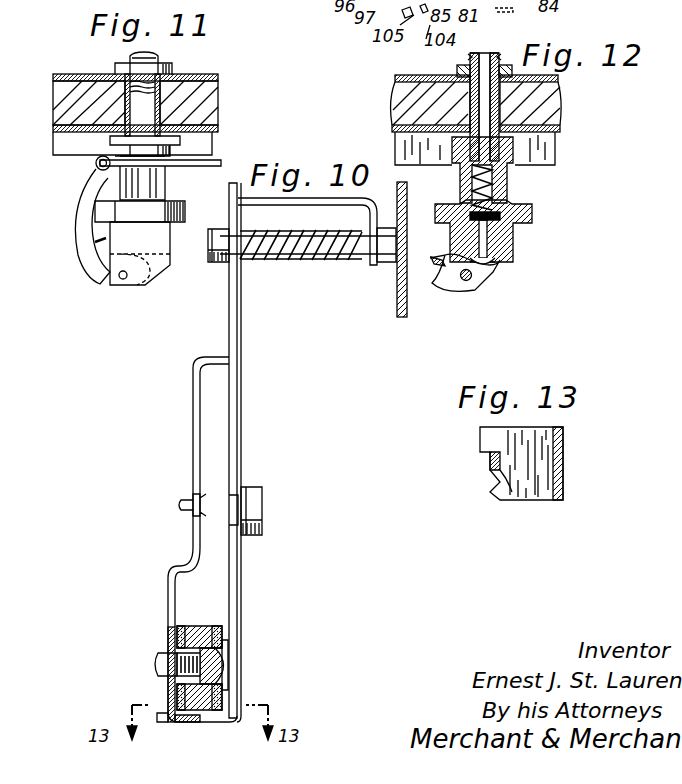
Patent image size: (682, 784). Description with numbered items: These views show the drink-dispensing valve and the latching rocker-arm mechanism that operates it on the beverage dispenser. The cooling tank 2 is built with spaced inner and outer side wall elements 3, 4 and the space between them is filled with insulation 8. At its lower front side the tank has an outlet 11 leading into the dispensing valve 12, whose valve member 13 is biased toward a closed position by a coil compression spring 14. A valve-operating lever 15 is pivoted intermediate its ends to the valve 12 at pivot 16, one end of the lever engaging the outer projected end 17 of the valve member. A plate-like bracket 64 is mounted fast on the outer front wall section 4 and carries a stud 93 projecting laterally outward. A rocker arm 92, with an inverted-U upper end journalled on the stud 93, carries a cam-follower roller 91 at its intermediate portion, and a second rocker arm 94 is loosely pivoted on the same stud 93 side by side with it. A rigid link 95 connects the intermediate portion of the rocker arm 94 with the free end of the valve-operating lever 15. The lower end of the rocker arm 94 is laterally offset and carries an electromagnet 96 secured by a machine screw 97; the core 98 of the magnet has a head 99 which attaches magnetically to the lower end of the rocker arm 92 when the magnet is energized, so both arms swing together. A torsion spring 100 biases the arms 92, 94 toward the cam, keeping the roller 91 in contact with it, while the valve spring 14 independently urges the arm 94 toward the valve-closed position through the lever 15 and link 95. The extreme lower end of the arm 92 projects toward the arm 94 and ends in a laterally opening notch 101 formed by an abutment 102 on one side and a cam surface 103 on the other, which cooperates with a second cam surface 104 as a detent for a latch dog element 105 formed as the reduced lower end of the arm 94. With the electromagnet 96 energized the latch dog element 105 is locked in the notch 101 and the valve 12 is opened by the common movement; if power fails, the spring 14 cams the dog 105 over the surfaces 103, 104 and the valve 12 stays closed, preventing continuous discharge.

In FIG. 11, the cooling tank 2 is at (197, 72).
In FIG. 11, the inner side wall element 3 is at (60, 74).
In FIG. 12, the inner side wall element 3 is at (403, 78).
In FIG. 11, the outer side wall element 4 is at (54, 130).
In FIG. 12, the outer side wall element 4 is at (562, 128).
In FIG. 11, the insulation 8 is at (197, 100).
In FIG. 12, the insulation 8 is at (542, 102).
In FIG. 12, the outlet 11 is at (512, 152).
In FIG. 11, the dispensing valve 12 is at (150, 246).
In FIG. 12, the dispensing valve 12 is at (514, 248).
In FIG. 12, the valve member 13 is at (486, 228).
In FIG. 12, the coil compression spring 14 is at (470, 182).
In FIG. 11, the valve-operating lever 15 is at (92, 252).
In FIG. 12, the valve-operating lever 15 is at (445, 278).
In FIG. 11, the pivot 16 is at (120, 278).
In FIG. 12, the pivot 16 is at (467, 281).
In FIG. 12, the outer projected end 17 is at (488, 260).
In FIG. 11, the plate-like bracket 64 is at (66, 148).
In FIG. 12, the plate-like bracket 64 is at (425, 136).
In FIG. 10, the plate-like bracket 64 is at (399, 300).
In FIG. 10, the roller 91 is at (262, 505).
In FIG. 10, the rocker arm 92 is at (238, 440).
In FIG. 13, the rocker arm 92 is at (540, 476).
In FIG. 10, the stud 93 is at (318, 258).
In FIG. 10, the second rocker arm 94 is at (193, 452).
In FIG. 11, the rigid link 95 is at (186, 160).
In FIG. 10, the rigid link 95 is at (179, 505).
In FIG. 10, the electromagnet 96 is at (192, 638).
In FIG. 10, the machine screw 97 is at (158, 664).
In FIG. 10, the core 98 is at (218, 660).
In FIG. 10, the head 99 is at (224, 676).
In FIG. 10, the torsion spring 100 is at (278, 258).
In FIG. 13, the notch 101 is at (513, 490).
In FIG. 10, the abutment 102 is at (160, 712).
In FIG. 13, the abutment 102 is at (480, 442).
In FIG. 13, the cam surface 103 is at (494, 478).
In FIG. 13, the second cam surface 104 is at (496, 492).
In FIG. 10, the latch dog element 105 is at (178, 722).
In FIG. 13, the latch dog element 105 is at (490, 462).